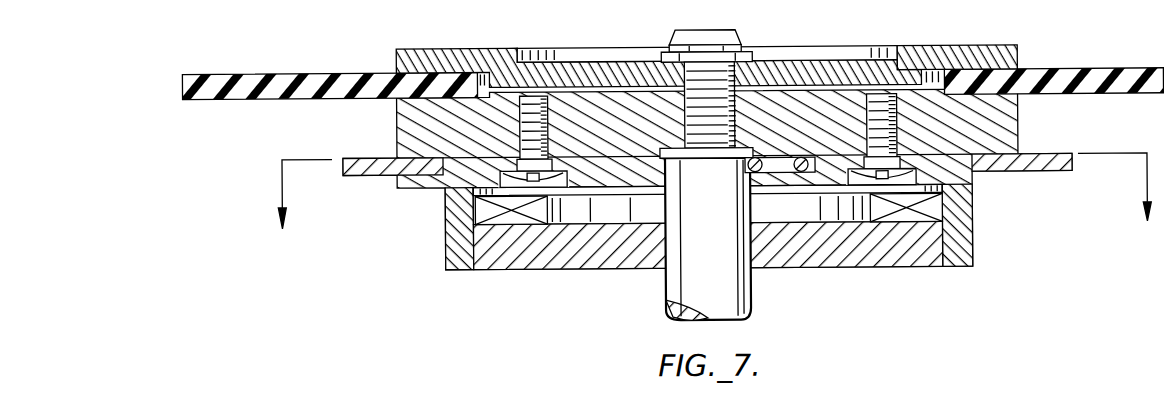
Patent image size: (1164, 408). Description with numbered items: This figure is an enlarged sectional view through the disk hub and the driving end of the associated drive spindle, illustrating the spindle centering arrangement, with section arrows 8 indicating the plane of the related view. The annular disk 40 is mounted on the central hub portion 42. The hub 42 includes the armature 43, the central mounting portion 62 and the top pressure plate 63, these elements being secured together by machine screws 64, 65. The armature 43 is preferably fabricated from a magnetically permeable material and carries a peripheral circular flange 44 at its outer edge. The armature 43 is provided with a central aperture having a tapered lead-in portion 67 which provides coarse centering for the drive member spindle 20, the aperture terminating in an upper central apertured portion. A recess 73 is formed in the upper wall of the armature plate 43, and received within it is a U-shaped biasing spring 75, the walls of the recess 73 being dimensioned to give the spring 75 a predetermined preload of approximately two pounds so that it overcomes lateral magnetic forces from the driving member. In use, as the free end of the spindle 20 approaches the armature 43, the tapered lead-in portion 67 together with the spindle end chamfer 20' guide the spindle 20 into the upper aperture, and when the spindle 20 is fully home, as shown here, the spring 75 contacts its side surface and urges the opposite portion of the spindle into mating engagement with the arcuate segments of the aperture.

The section line 8- 8 is at (712, 202).
The drive member spindle 20 is at (708, 239).
The spindle end chamfer 20' is at (676, 232).
The annular disk 40 is at (248, 70).
The central hub portion 42 is at (452, 42).
The armature 43 is at (597, 173).
The peripheral circular flange 44 is at (373, 176).
The central mounting portion 62 is at (1003, 120).
The top pressure plate 63 is at (985, 46).
The machine screw 64 is at (545, 197).
The machine screw 65 is at (705, 30).
The tapered lead-in portion 67 is at (752, 190).
The recess 73 is at (773, 140).
The U-shaped biasing spring 75 is at (803, 150).